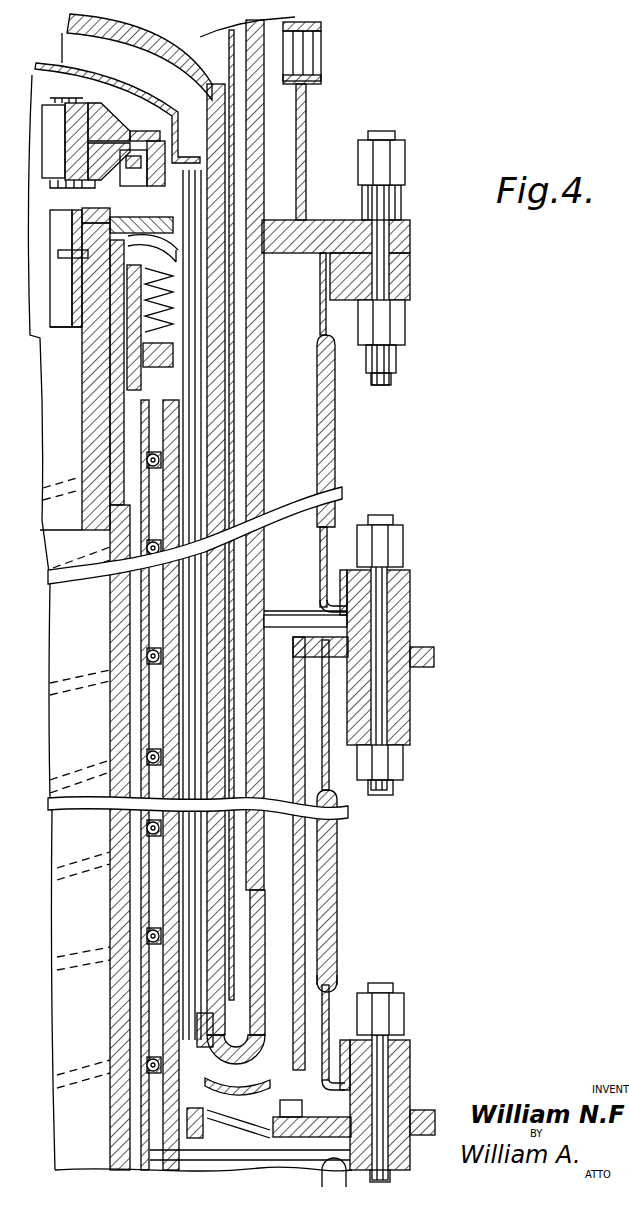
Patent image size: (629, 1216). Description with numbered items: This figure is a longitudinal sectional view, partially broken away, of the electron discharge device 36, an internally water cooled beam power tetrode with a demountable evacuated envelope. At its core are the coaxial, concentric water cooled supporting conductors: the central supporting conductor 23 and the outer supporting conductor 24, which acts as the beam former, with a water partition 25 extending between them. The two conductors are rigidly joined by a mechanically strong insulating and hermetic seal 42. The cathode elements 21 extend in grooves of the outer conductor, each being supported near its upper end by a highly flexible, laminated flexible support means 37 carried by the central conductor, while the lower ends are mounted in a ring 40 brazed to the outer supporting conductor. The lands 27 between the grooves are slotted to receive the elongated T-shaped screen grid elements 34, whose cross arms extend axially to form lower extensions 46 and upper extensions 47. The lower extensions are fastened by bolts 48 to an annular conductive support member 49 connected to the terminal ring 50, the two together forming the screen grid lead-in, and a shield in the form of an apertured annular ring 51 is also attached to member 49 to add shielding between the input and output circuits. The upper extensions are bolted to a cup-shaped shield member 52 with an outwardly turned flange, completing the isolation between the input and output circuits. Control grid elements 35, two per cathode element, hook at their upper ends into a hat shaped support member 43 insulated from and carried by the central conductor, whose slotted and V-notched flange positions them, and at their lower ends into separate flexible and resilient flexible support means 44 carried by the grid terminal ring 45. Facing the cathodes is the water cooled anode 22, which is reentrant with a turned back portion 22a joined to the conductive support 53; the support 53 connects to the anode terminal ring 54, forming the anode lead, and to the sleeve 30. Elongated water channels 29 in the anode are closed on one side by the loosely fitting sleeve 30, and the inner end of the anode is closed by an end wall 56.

The cathode elements 21 is at (165, 592).
The anode 22 is at (240, 960).
The turned back portion 22a is at (265, 1007).
The central supporting conductor 23 is at (112, 916).
The outer supporting conductor 24 is at (172, 862).
The water partition 25 is at (140, 818).
The lands 27 is at (180, 623).
The water channels 29 is at (250, 900).
The sleeve 30 is at (237, 940).
The screen grid elements 34 is at (200, 693).
The control grid elements 35 is at (160, 1097).
The electron discharge device 36 is at (362, 418).
The flexible support means 37 is at (88, 262).
The ring 40 is at (185, 1025).
The insulating and hermetic seal 42 is at (150, 380).
The hat shaped support member 43 is at (108, 118).
The flexible support means 44 is at (212, 1147).
The grid terminal ring 45 is at (436, 1116).
The lower extensions 46 is at (150, 1060).
The upper extensions 47 is at (202, 174).
The bolts 48 is at (248, 1030).
The annular conductive support member 49 is at (333, 818).
The terminal ring 50 is at (434, 655).
The apertured annular ring 51 is at (323, 1041).
The cup-shaped shield member 52 is at (36, 66).
The conductive support 53 is at (263, 437).
The anode terminal ring 54 is at (412, 232).
The end wall 56 is at (67, 32).